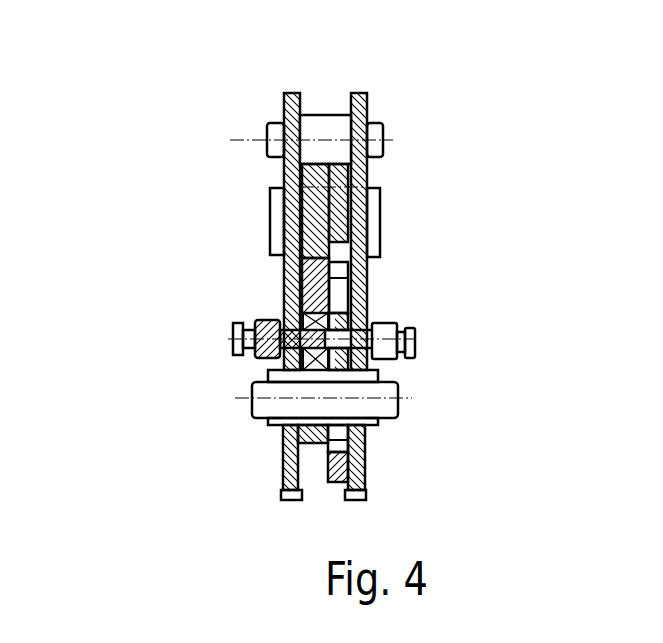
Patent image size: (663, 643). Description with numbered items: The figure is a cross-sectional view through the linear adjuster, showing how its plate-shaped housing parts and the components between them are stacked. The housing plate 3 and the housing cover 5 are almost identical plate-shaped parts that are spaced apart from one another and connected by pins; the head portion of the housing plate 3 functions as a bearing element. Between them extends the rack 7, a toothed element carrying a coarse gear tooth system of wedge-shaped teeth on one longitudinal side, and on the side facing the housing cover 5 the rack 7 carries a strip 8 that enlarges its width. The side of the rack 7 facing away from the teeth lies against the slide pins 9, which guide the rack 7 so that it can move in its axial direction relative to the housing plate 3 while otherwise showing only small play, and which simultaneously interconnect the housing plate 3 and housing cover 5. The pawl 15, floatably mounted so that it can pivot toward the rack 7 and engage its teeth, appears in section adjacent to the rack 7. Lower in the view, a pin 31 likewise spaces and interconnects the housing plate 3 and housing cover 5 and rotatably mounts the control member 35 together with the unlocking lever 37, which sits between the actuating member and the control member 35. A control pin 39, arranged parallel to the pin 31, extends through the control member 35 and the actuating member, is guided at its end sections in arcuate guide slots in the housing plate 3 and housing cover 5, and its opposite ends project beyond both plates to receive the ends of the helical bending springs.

The housing plate 3 is at (283, 103).
The housing cover 5 is at (362, 113).
The rack 7 is at (300, 213).
The strip 8 is at (350, 207).
The slide pin 9 is at (315, 129).
The pawl 15 is at (313, 297).
The pin 31 is at (310, 403).
The control member 35 is at (368, 383).
The unlocking lever 37 is at (327, 428).
The control pin 39 is at (247, 338).